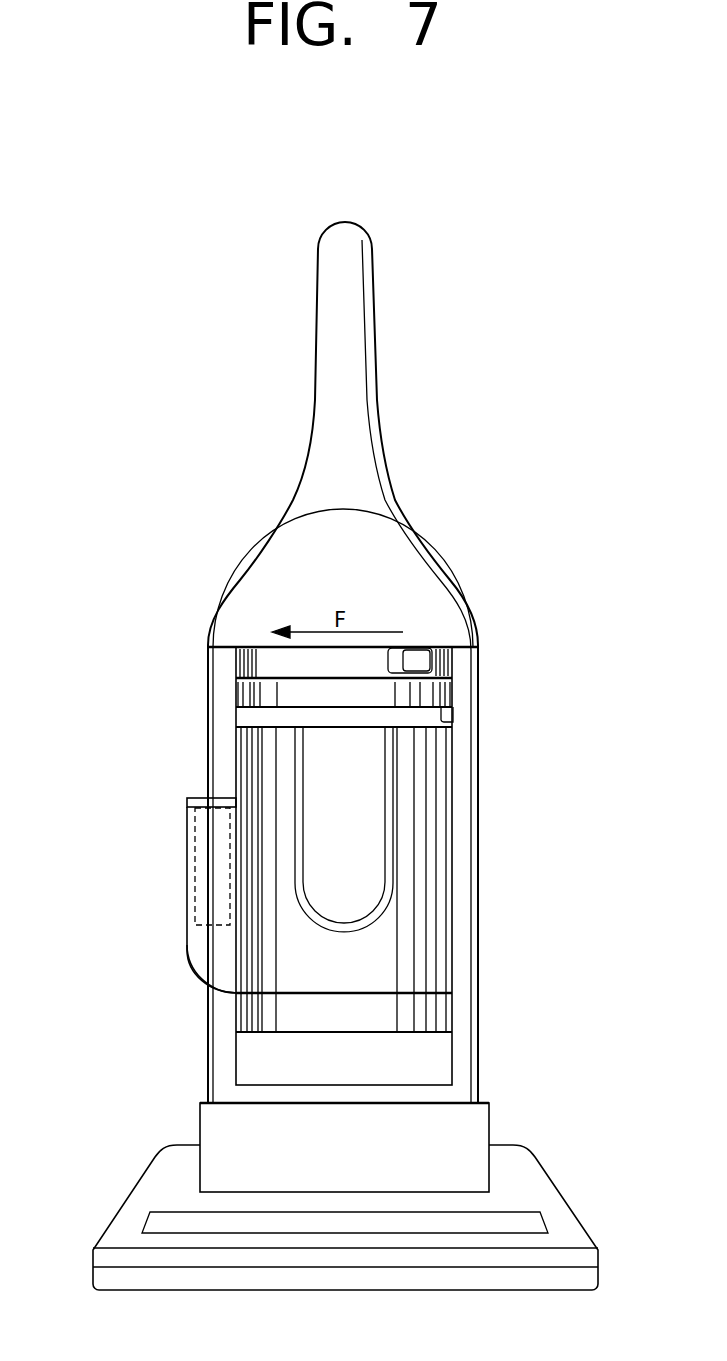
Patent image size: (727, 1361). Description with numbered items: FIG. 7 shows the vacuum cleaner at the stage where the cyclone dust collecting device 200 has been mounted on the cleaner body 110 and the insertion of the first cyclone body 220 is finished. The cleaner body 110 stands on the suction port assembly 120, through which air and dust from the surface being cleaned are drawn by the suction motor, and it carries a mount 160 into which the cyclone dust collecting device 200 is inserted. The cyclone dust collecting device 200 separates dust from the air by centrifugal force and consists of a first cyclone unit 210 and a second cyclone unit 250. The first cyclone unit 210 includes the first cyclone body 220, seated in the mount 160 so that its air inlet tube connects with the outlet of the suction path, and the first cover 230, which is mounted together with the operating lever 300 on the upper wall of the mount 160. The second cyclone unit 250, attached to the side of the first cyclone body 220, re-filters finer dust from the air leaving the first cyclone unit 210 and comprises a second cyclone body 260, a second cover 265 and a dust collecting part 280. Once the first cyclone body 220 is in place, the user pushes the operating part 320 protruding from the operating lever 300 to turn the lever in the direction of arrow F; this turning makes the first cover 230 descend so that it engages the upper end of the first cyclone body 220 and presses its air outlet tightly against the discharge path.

The cleaner body 110 is at (412, 565).
The suction port assembly 120 is at (530, 1183).
The mount 160 is at (450, 690).
The cyclone dust collecting device 200 is at (83, 733).
The first cyclone unit 210 is at (236, 744).
The first cyclone body 220 is at (433, 822).
The first cover 230 is at (248, 685).
The second cyclone unit 250 is at (186, 833).
The second cyclone body 260 is at (202, 950).
The second cover 265 is at (200, 795).
The dust collecting part 280 is at (205, 895).
The operating lever 300 is at (448, 662).
The operating part 320 is at (418, 660).